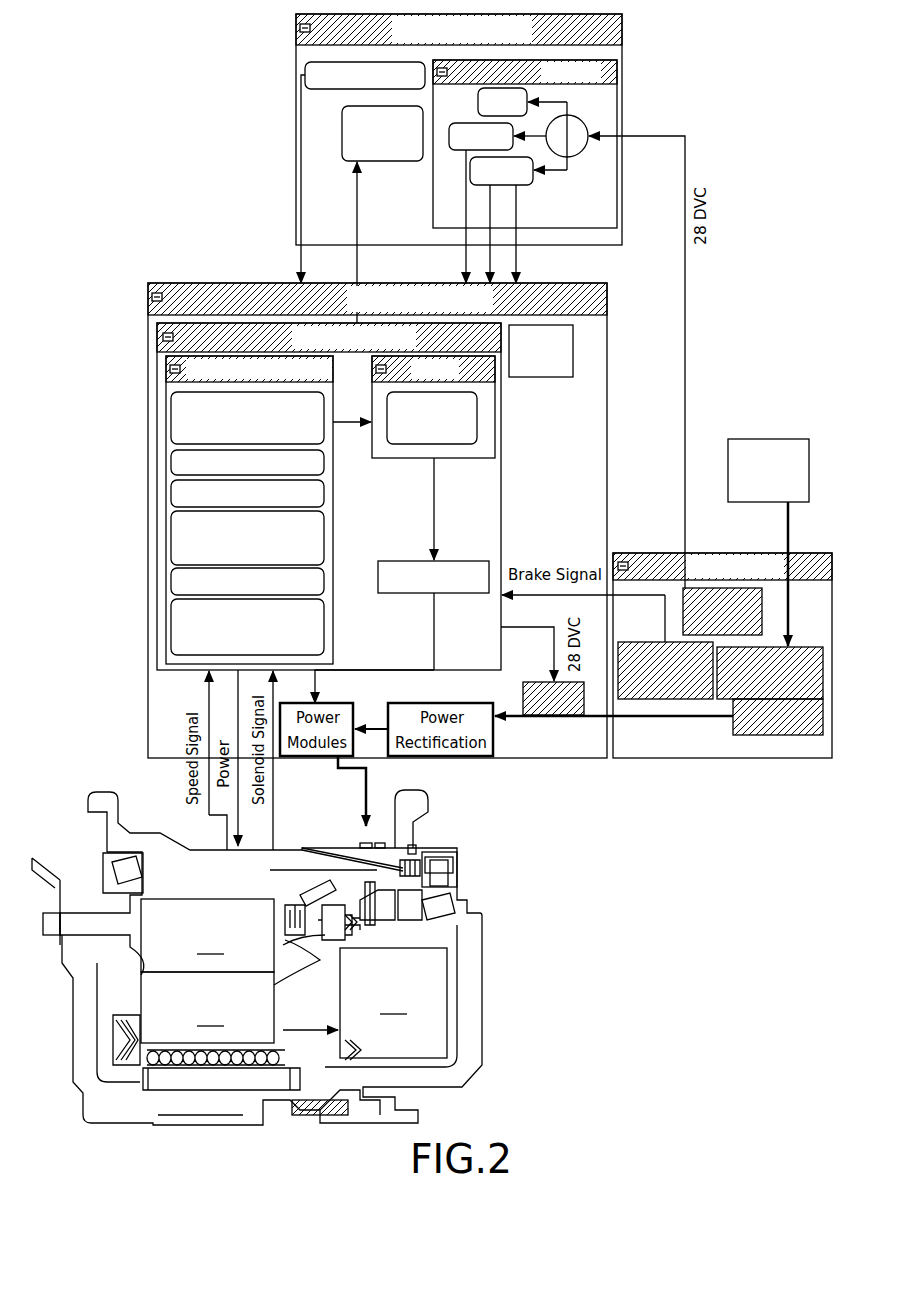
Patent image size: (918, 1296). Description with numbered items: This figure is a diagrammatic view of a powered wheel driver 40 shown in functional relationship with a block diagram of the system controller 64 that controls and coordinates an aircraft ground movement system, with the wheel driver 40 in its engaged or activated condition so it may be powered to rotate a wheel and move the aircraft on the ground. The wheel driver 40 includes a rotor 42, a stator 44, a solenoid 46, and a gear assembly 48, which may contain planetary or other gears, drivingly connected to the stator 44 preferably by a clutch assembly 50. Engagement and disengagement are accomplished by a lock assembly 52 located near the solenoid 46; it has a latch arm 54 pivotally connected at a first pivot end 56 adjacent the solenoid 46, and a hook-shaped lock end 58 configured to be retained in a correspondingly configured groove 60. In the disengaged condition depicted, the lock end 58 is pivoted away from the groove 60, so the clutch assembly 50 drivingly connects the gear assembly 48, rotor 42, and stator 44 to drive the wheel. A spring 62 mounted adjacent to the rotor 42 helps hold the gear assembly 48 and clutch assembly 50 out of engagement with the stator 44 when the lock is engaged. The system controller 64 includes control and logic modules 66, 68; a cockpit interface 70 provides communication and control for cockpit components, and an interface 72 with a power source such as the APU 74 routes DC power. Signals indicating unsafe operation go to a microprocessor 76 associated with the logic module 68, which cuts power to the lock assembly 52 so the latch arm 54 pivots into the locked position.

The wheel driver 40 is at (313, 947).
The rotor 42 is at (207, 1007).
The stator 44 is at (207, 935).
The solenoid 46 is at (300, 930).
The gear assembly 48 is at (365, 1003).
The clutch assembly 50 is at (488, 975).
The lock assembly 52 is at (330, 878).
The latch arm 54 is at (312, 895).
The first pivot end 56 is at (292, 905).
The lock end 58 is at (352, 878).
The groove 60 is at (400, 905).
The spring 62 is at (137, 1058).
The system controller 64 is at (145, 478).
The control module 66 is at (592, 372).
The logic module 68 is at (195, 336).
The cockpit interface 70 is at (296, 50).
The interface 72 is at (808, 605).
The APU 74 is at (745, 440).
The microprocessor 76 is at (166, 545).